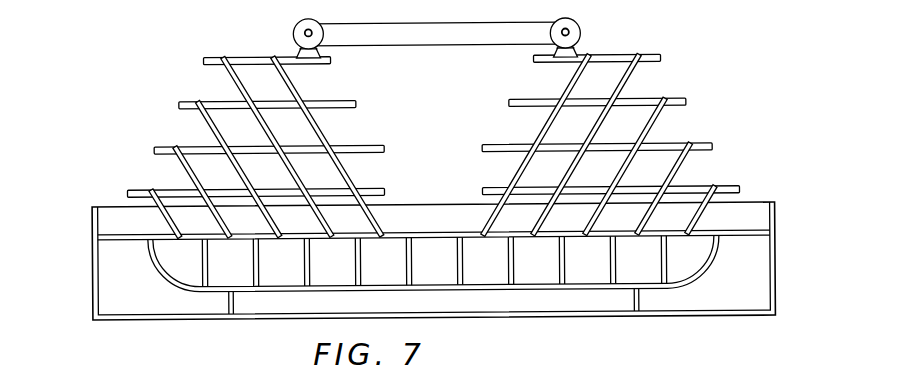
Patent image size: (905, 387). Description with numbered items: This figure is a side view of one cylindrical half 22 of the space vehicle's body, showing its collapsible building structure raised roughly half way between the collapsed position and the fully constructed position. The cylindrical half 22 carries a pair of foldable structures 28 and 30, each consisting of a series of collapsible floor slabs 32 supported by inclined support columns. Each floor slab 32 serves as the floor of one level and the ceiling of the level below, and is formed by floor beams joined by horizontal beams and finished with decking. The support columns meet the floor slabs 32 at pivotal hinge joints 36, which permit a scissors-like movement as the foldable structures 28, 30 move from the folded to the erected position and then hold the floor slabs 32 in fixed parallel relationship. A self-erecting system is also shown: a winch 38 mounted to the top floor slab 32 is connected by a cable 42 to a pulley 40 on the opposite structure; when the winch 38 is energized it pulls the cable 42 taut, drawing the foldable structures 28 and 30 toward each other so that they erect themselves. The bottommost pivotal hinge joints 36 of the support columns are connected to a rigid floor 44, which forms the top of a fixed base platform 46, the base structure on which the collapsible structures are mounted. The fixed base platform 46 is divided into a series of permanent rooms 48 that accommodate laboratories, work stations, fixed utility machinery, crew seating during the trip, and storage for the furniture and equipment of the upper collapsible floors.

The cylindrical half 22 is at (437, 289).
The foldable structure 28 is at (698, 88).
The foldable structure 30 is at (231, 133).
The collapsible floor slab 32 is at (223, 56).
The pivotal hinge joint 36 is at (179, 151).
The winch 38 is at (300, 28).
The pulley 40 is at (583, 31).
The cable 42 is at (414, 22).
The rigid floor 44 is at (132, 236).
The fixed base platform 46 is at (180, 290).
The permanent room 48 is at (280, 280).